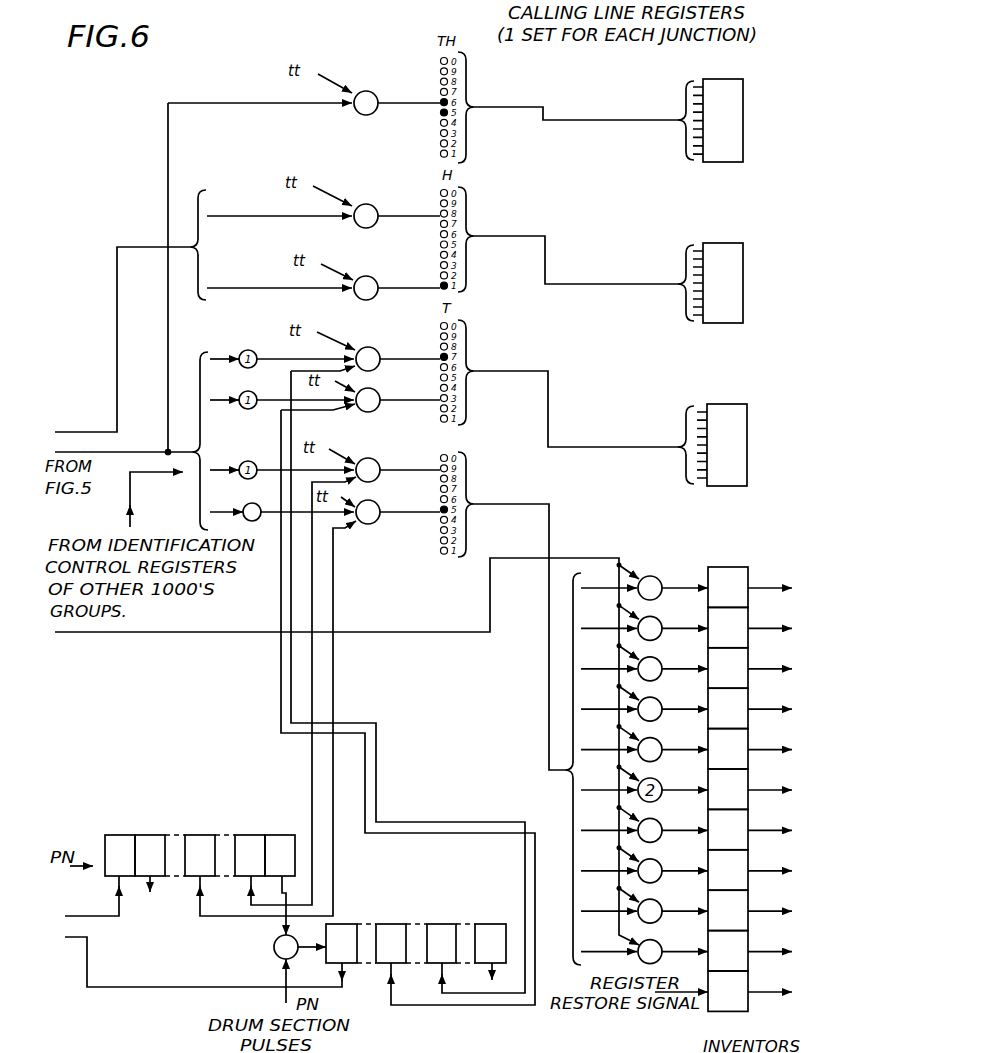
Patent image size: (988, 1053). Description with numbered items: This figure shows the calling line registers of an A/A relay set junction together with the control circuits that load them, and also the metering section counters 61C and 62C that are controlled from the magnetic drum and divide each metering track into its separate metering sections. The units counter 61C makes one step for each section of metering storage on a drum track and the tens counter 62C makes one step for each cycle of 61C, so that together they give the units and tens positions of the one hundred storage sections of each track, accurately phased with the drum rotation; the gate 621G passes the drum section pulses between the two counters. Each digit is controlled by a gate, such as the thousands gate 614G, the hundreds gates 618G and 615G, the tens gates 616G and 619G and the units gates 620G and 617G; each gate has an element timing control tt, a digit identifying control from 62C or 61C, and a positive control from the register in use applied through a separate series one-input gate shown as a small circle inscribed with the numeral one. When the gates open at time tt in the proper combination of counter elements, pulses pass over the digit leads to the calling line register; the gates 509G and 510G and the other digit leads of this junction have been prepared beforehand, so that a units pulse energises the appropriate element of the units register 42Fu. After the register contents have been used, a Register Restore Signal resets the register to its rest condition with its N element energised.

The thousands digit gate 614G is at (397, 95).
The hundreds digit gate 618G is at (396, 207).
The hundreds digit gate 615G is at (397, 279).
The tens digit gate 616G is at (396, 350).
The tens digit gate 619G is at (398, 397).
The units digit gate 620G is at (398, 462).
The units digit gate 617G is at (398, 509).
The units register input gate 509G is at (658, 578).
The units register input gate 510G is at (673, 622).
The drum section pulse gate 621G is at (259, 948).
The units drum section counter 61C is at (200, 844).
The tens drum section counter 62C is at (423, 932).
The units calling line register 42Fu is at (769, 777).